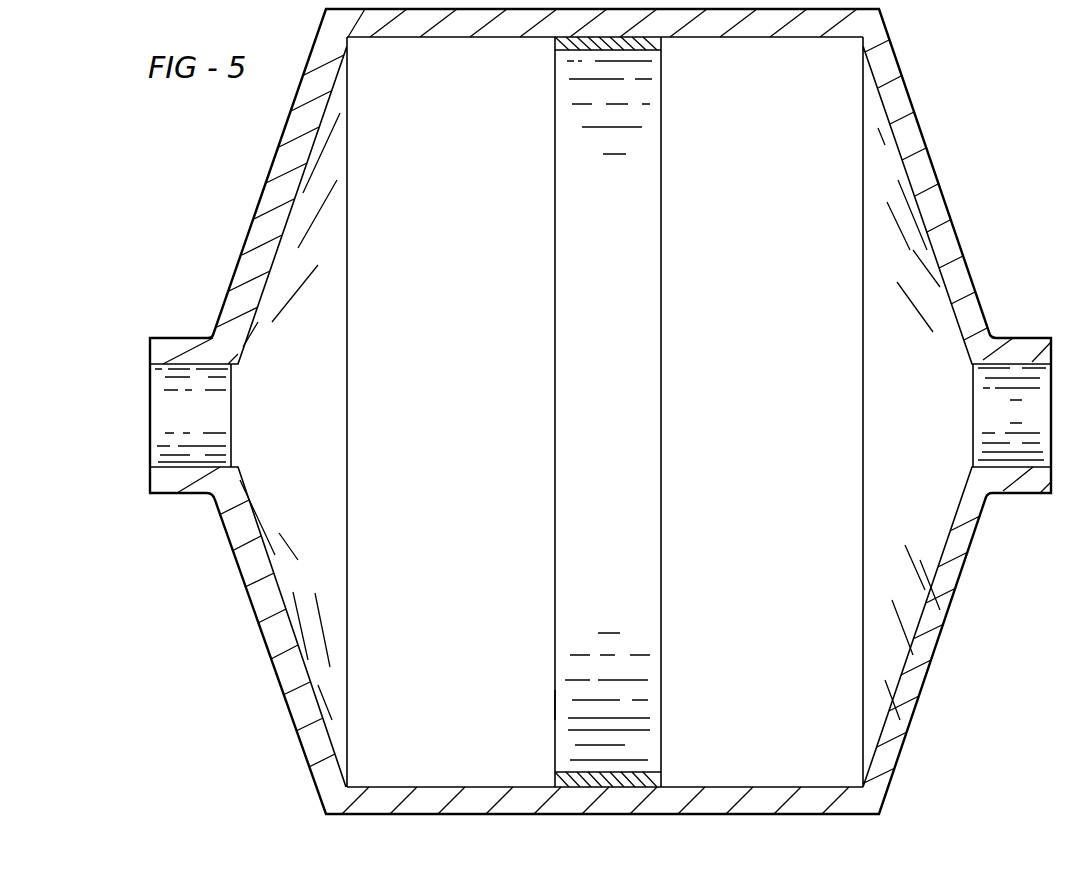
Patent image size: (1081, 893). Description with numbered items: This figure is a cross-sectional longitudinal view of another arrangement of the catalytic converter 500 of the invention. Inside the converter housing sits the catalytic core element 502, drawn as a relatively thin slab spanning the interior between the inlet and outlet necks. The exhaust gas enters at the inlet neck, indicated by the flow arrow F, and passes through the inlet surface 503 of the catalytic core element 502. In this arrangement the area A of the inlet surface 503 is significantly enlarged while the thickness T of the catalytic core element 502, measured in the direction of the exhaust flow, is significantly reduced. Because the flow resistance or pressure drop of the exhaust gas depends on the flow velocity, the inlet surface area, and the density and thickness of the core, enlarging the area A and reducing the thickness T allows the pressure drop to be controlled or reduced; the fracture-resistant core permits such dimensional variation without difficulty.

The catalytic converter 500 is at (230, 263).
The catalytic core element 502 is at (663, 228).
The inlet surface 503 is at (555, 170).
The area of the inlet surface A is at (553, 700).
The fluid flow direction F is at (137, 412).
The thickness of the catalytic core element T is at (661, 832).